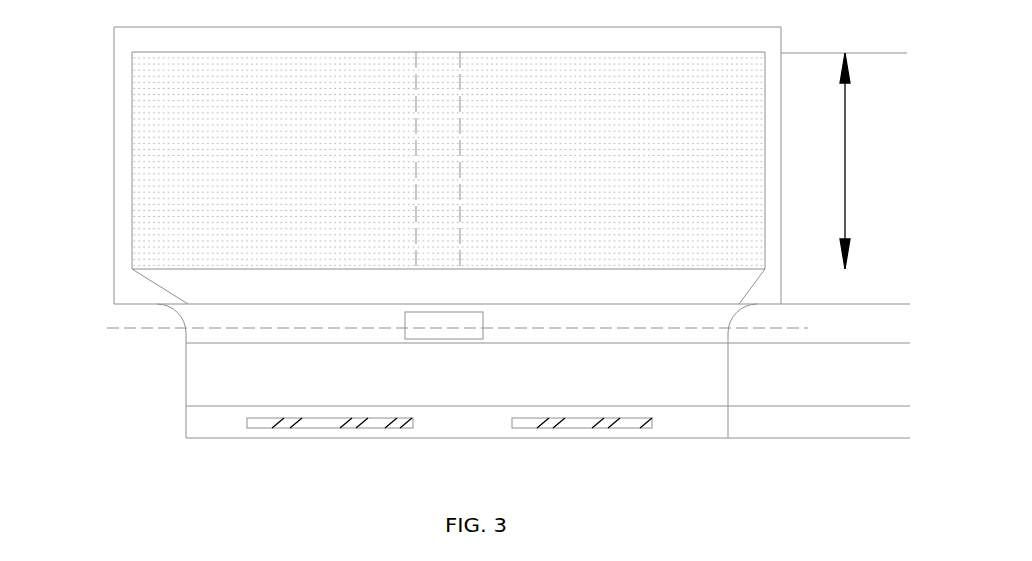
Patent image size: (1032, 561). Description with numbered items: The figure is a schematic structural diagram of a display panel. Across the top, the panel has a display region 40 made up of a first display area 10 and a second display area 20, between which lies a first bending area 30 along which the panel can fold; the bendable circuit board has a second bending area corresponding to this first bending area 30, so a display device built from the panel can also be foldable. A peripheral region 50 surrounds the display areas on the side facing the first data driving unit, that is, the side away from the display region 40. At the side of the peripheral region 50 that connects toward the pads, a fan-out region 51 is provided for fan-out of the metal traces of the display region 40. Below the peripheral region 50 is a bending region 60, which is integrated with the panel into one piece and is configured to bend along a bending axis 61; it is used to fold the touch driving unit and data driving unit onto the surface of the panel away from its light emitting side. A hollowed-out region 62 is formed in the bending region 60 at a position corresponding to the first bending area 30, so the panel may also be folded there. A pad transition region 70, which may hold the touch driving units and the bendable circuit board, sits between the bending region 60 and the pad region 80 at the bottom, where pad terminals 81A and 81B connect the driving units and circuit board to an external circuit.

The first display area 10 is at (274, 160).
The second display area 20 is at (612, 160).
The first bending area 30 is at (438, 160).
The display region 40 is at (857, 161).
The peripheral region 50 is at (130, 127).
The fan-out region 51 is at (447, 290).
The bending region 60 is at (845, 304).
The bending axis 61 is at (143, 328).
The hollowed-out region 62 is at (443, 330).
The pad transition region 70 is at (845, 343).
The pad region 80 is at (845, 406).
The pad terminal 81A is at (260, 428).
The pad terminal 81B is at (612, 428).